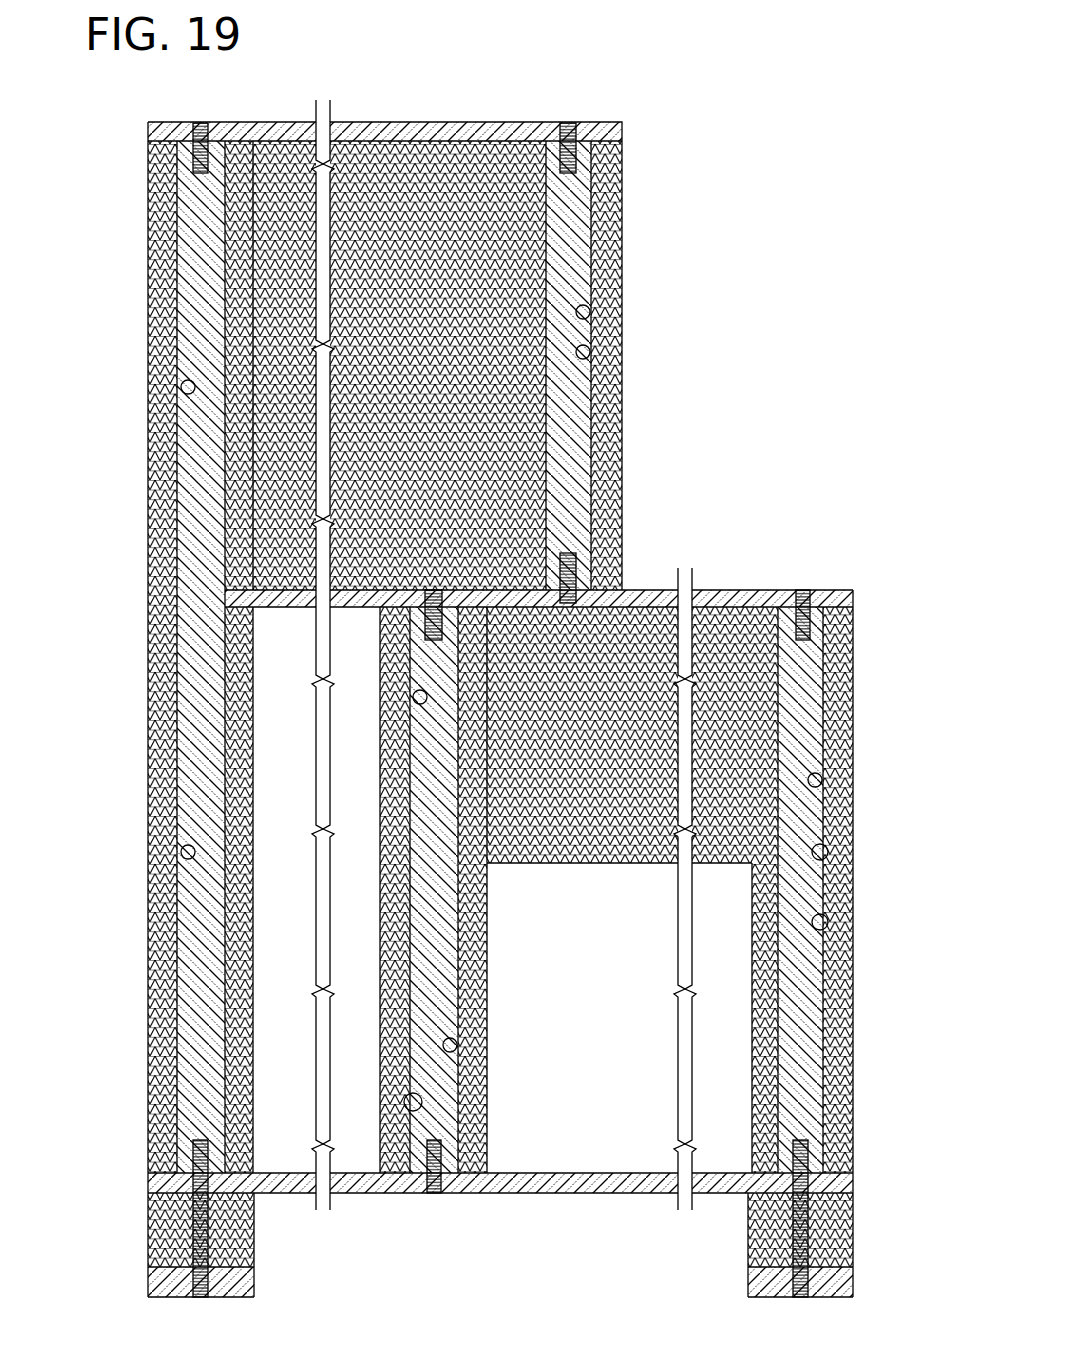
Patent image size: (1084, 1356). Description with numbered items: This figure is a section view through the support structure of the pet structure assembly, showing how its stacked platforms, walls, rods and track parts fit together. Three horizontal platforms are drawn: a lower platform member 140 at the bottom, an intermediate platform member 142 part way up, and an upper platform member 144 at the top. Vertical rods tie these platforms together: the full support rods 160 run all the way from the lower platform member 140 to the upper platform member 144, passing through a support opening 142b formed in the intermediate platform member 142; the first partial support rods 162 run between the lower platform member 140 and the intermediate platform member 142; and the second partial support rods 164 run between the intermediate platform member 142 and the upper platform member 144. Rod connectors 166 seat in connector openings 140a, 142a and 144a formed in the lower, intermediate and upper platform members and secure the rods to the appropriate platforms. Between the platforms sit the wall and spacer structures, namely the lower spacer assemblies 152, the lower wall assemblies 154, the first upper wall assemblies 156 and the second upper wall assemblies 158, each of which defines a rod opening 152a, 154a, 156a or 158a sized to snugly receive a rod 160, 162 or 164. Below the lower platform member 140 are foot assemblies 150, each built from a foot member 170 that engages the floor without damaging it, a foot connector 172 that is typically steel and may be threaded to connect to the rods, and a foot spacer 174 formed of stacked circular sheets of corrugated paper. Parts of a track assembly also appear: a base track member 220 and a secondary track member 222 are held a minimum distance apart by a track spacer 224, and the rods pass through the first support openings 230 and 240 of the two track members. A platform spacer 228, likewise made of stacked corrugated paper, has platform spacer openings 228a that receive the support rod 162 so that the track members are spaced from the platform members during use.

The lower platform member 140 is at (499, 1195).
The connector openings 140a is at (185, 1180).
The intermediate platform member 142 is at (470, 591).
The connector openings 142a is at (605, 595).
The support opening 142b is at (165, 600).
The upper platform member 144 is at (372, 104).
The connector openings 144a is at (190, 128).
The foot assemblies 150 is at (502, 1219).
The lower spacer assemblies 152 is at (151, 890).
The rod opening 152a is at (190, 855).
The lower wall assemblies 154 is at (605, 939).
The rod opening 154a is at (815, 730).
The first upper wall assemblies 156 is at (153, 365).
The rod opening 156a is at (190, 388).
The second upper wall assemblies 158 is at (631, 365).
The rod opening 158a is at (585, 312).
The full support rods 160 is at (190, 340).
The first partial support rods 162 is at (813, 780).
The second partial support rods 164 is at (585, 352).
The rod connectors 166 is at (197, 152).
The foot member 170 is at (175, 1285).
The foot connector 172 is at (200, 1250).
The foot spacer 174 is at (175, 1230).
The base track member 220 is at (845, 917).
The secondary track member 222 is at (853, 863).
The track spacer 224 is at (853, 890).
The platform spacer 228 is at (490, 1000).
The platform spacer openings 228a is at (450, 1045).
The first support opening 230 is at (853, 945).
The first support opening 240 is at (822, 850).